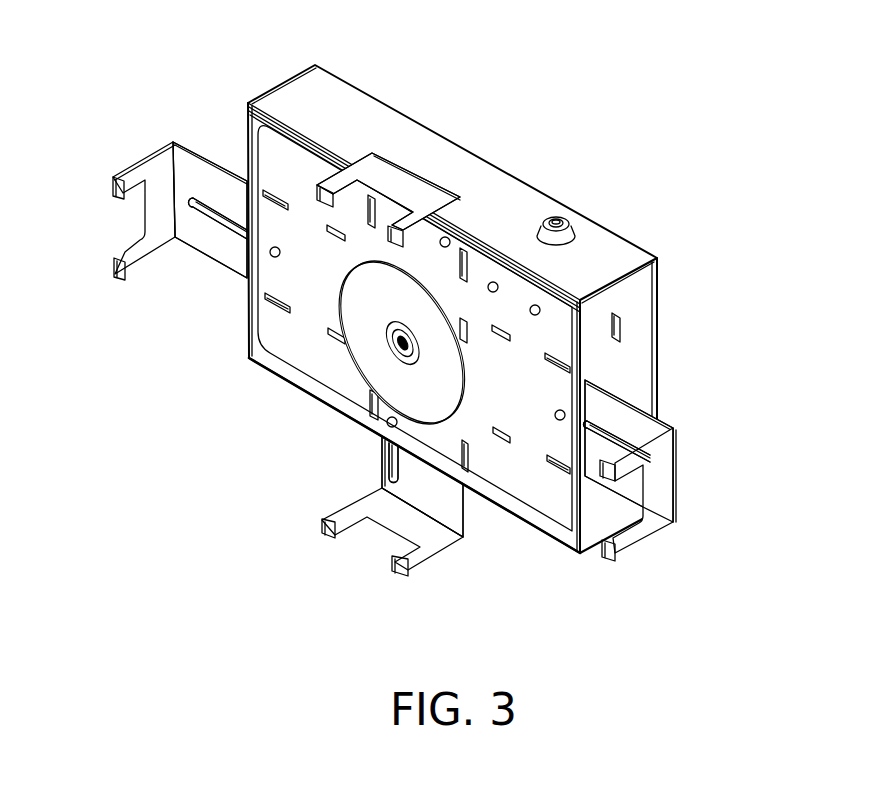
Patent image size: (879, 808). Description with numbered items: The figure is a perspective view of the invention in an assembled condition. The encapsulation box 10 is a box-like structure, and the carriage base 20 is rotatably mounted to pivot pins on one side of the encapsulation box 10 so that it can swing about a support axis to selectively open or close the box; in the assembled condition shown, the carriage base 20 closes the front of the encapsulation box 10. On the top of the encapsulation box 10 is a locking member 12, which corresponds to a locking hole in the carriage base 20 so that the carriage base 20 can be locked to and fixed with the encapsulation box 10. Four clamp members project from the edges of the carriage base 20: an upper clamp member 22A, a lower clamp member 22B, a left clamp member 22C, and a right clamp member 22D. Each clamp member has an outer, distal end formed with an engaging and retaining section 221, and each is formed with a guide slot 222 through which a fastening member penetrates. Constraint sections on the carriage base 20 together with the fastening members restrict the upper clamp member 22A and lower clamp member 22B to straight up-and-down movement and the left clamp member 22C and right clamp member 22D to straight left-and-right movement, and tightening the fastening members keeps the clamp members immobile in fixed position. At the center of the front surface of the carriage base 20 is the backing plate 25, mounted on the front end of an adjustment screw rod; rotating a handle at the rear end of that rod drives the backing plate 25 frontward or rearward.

The encapsulation box 10 is at (328, 93).
The locking member 12 is at (557, 218).
The carriage base 20 is at (305, 365).
The backing plate 25 is at (365, 288).
The upper clamp member 22A is at (423, 172).
The lower clamp member 22B is at (468, 535).
The left clamp member 22C is at (213, 160).
The right clamp member 22D is at (677, 425).
The engaging and retaining section 221 is at (140, 158).
The guide slot 222 is at (237, 228).